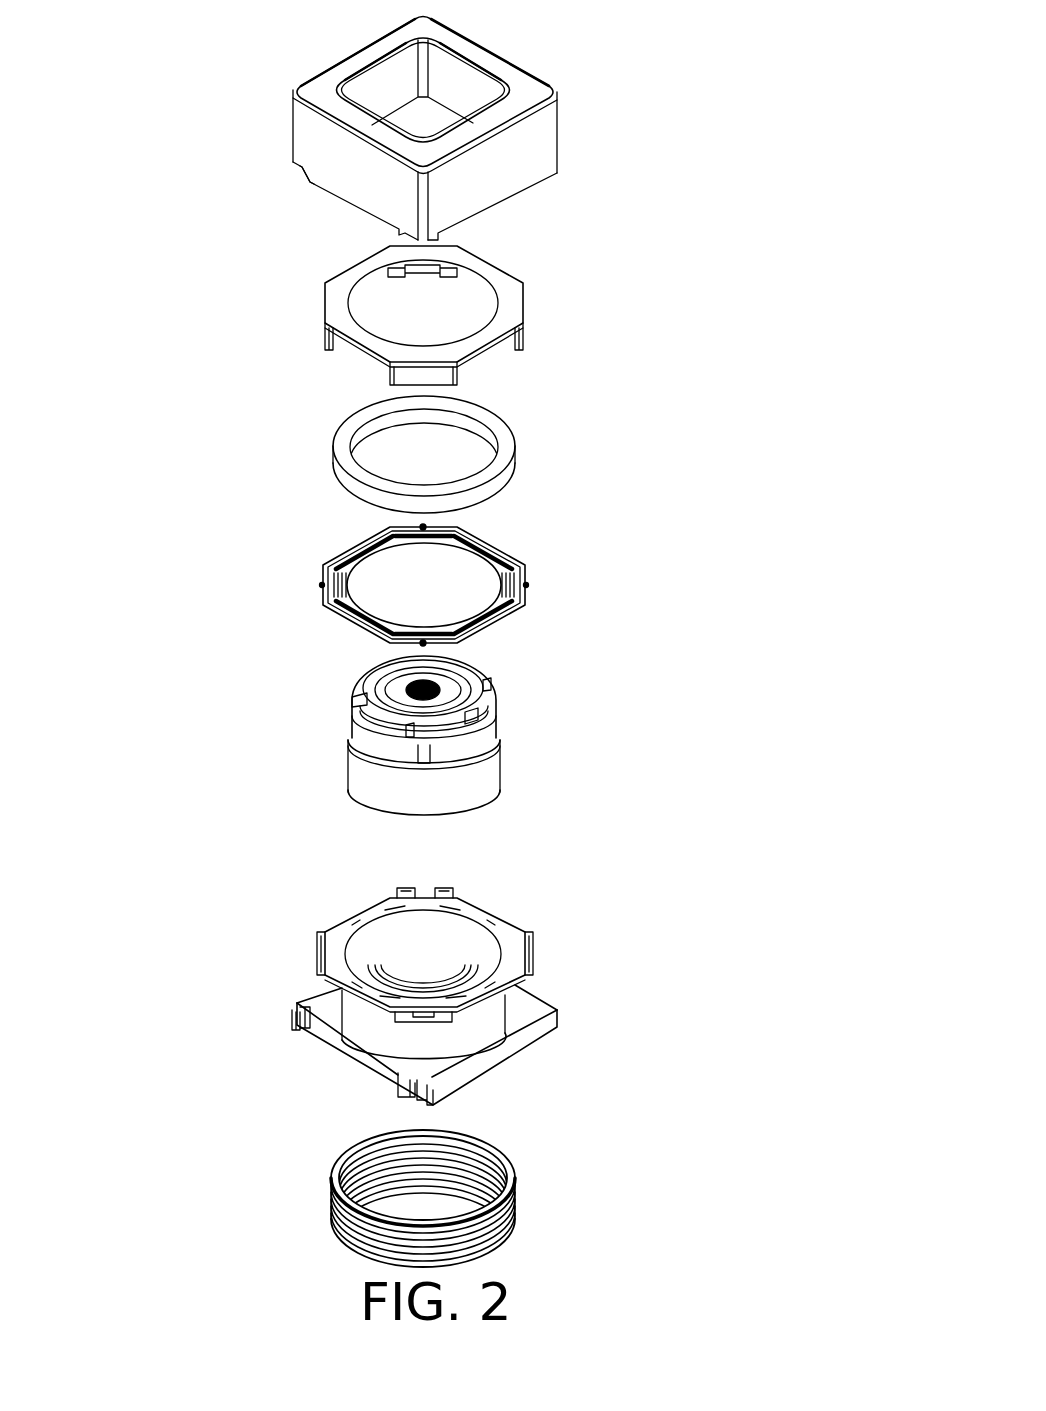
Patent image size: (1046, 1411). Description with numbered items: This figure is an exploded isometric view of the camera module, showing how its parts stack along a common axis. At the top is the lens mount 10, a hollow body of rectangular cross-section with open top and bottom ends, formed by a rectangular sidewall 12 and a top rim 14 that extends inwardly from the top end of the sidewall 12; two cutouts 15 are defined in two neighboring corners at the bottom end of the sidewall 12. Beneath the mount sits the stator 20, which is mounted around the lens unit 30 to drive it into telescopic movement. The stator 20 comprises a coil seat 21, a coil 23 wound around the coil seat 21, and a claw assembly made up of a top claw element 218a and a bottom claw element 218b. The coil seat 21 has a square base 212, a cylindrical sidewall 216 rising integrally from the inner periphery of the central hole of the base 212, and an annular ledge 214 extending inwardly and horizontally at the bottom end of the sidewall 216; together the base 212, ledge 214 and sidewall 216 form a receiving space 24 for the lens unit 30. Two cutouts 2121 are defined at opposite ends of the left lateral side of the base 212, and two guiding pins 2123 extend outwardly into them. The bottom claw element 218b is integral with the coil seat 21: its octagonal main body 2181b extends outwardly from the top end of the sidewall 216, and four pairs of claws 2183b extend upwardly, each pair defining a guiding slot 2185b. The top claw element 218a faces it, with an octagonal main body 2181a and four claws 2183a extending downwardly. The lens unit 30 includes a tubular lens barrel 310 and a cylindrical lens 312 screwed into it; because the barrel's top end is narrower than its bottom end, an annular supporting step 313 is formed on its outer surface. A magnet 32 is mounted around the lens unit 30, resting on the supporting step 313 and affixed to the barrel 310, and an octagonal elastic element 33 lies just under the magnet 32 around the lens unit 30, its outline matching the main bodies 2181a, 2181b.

The lens mount 10 is at (570, 106).
The sidewall 12 is at (527, 168).
The top rim 14 is at (532, 84).
The cutouts 15 is at (300, 168).
The stator 20 is at (762, 302).
The coil seat 21 is at (690, 893).
The coil 23 is at (515, 1217).
The receiving space 24 is at (381, 937).
The lens unit 30 is at (200, 632).
The magnet 32 is at (348, 445).
The elastic element 33 is at (335, 585).
The base 212 is at (530, 1033).
The annular ledge 214 is at (432, 967).
The cylindrical sidewall 216 is at (487, 1017).
The top claw element 218a is at (539, 315).
The bottom claw element 218b is at (496, 899).
The lens barrel 310 is at (380, 770).
The lens 312 is at (378, 668).
The annular supporting step 313 is at (353, 718).
The cutouts 2121 is at (307, 1032).
The guiding pins 2123 is at (293, 1011).
The main body 2181a is at (517, 308).
The claws 2183a is at (521, 338).
The main body 2181b is at (482, 913).
The claws 2183b is at (450, 887).
The guiding slot 2185b is at (420, 888).